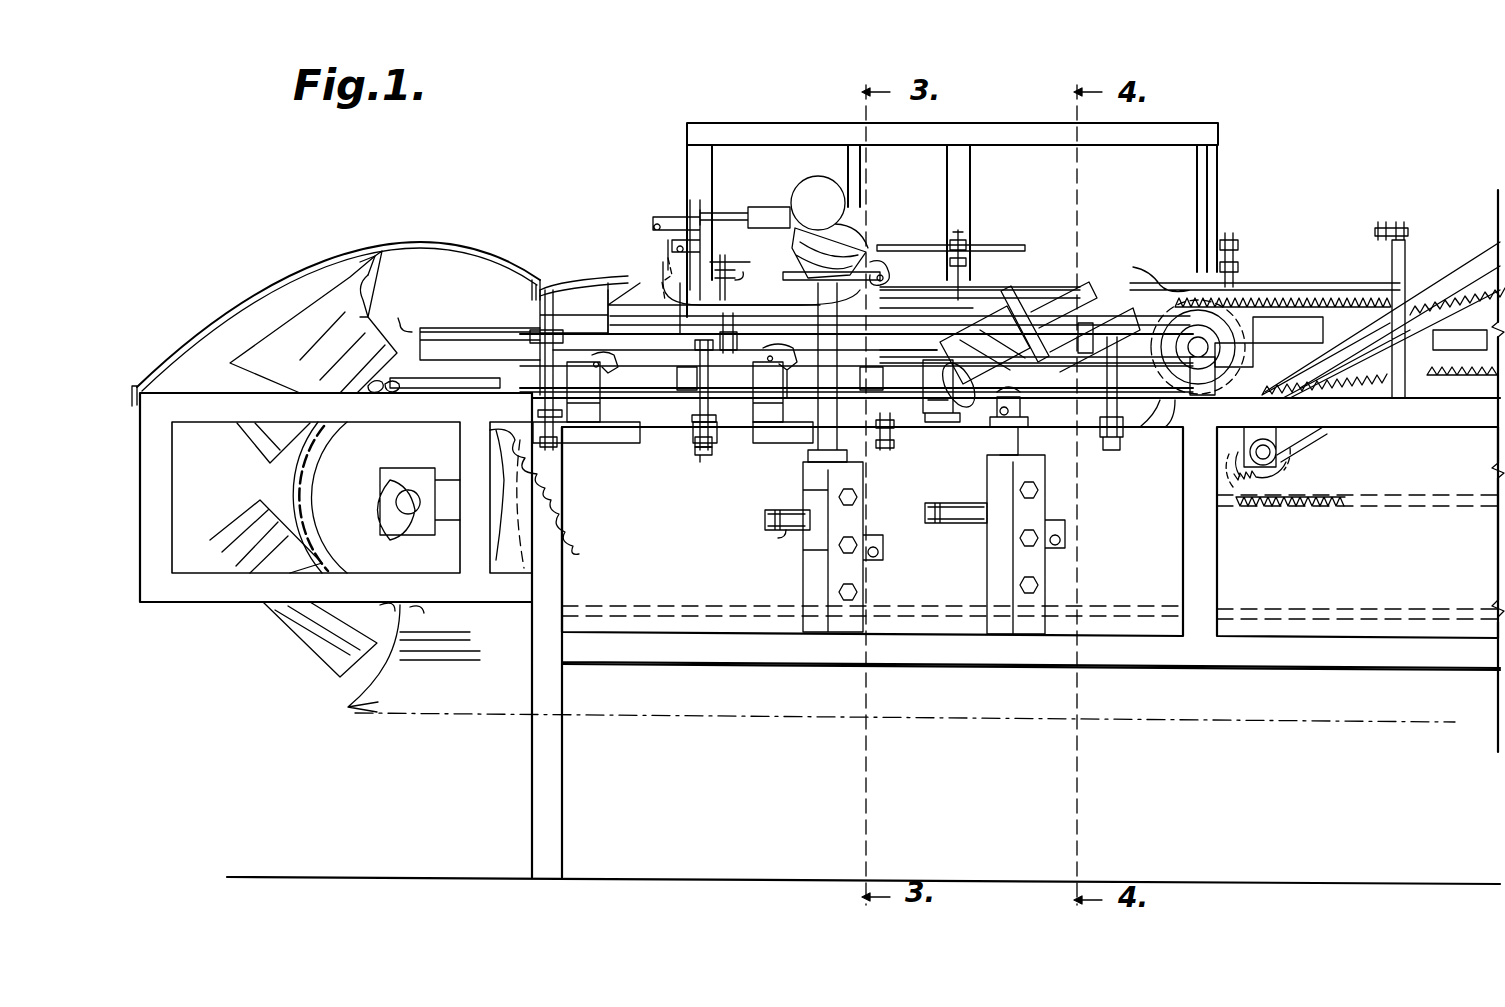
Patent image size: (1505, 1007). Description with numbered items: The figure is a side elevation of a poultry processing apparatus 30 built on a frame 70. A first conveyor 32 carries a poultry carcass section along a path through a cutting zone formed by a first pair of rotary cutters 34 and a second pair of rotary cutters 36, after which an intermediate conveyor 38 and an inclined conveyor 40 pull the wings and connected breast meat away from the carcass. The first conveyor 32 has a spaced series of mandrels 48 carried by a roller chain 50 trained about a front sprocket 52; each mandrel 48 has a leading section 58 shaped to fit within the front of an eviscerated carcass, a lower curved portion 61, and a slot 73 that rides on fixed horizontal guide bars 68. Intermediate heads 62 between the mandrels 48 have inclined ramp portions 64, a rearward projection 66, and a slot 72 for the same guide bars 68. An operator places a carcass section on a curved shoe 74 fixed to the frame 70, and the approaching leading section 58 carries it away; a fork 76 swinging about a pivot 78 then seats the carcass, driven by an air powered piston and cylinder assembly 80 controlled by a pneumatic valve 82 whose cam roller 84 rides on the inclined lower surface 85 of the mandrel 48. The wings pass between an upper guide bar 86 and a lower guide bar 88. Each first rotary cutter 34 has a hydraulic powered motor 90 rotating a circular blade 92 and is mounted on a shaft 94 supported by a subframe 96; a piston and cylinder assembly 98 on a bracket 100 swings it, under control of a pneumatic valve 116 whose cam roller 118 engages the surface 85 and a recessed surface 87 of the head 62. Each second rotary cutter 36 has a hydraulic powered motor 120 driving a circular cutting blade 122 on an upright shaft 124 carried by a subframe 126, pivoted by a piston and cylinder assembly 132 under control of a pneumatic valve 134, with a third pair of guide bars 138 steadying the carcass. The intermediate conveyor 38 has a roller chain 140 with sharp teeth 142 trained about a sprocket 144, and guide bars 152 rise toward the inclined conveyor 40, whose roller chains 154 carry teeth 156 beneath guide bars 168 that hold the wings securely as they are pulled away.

The poultry processing apparatus 30 is at (594, 146).
The first conveyor 32 is at (314, 268).
The first pair of rotary cutters 34 is at (822, 170).
The second pair of rotary cutters 36 is at (1028, 297).
The intermediate conveyor 38 is at (1311, 290).
The inclined conveyor 40 is at (1485, 248).
The mandrel 48 is at (270, 322).
The roller chain 50 is at (296, 468).
The front sprocket 52 is at (520, 536).
The leading section 58 is at (378, 262).
The lower curved portion 61 is at (378, 294).
The intermediate head 62 is at (298, 644).
The inclined ramp portion 64 is at (570, 327).
The projection 66 is at (390, 332).
The horizontal guide bars 68 is at (656, 362).
The frame 70 is at (532, 790).
The slot 72 is at (447, 328).
The slot 73 is at (310, 363).
The curved shoe 74 is at (553, 278).
The fork 76 is at (668, 272).
The pivot 78 is at (660, 248).
The piston and cylinder assembly 80 is at (774, 204).
The pneumatic valve 82 is at (580, 432).
The cam roller 84 is at (614, 370).
The inclined lower surface 85 is at (744, 370).
The upper guide bar 86 is at (746, 298).
The recessed surface 87 is at (850, 368).
The lower guide bar 88 is at (627, 312).
The hydraulic powered motor 90 is at (814, 196).
The circular blade 92 is at (880, 264).
The shaft 94 is at (812, 446).
The subframe 96 is at (802, 577).
The piston and cylinder assembly 98 is at (760, 522).
The bracket 100 is at (778, 538).
The pneumatic valve 116 is at (730, 448).
The cam roller 118 is at (793, 370).
The hydraulic powered motor 120 is at (963, 294).
The circular cutting blade 122 is at (1102, 288).
The upright shaft 124 is at (1035, 438).
The subframe 126 is at (987, 578).
The piston and cylinder assembly 132 is at (950, 528).
The pneumatic valve 134 is at (925, 446).
The third pair of guide bars 138 is at (1090, 282).
The roller chain 140 is at (1270, 288).
The teeth 142 is at (1333, 298).
The sprocket 144 is at (1175, 389).
The guide bars 152 is at (1172, 300).
The roller chains 154 is at (1345, 508).
The teeth 156 is at (1303, 458).
The guide bars 168 is at (1480, 258).